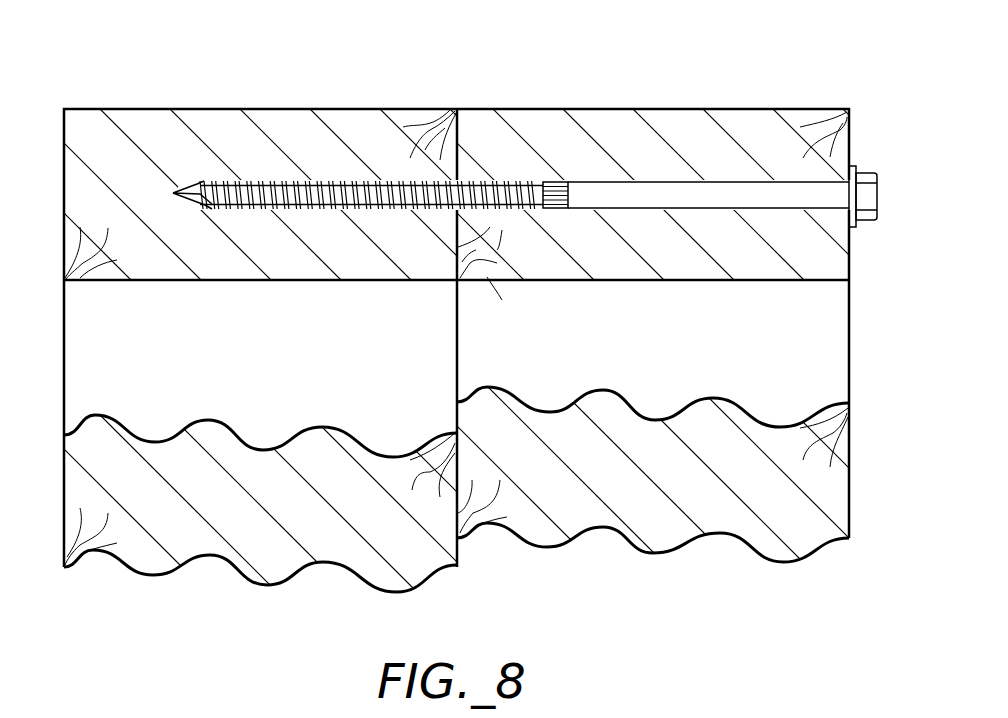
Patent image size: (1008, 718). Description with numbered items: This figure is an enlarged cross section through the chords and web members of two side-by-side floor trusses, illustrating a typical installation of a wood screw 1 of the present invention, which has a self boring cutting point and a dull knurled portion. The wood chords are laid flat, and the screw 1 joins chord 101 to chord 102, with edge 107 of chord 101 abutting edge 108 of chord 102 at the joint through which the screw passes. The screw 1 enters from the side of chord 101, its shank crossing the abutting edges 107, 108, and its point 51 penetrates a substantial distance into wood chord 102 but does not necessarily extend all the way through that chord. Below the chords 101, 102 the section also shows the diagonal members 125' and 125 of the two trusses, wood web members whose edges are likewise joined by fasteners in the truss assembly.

The wood screw 1 is at (598, 182).
The point 51 is at (173, 193).
The chord 101 is at (686, 109).
The chord 102 is at (273, 109).
The edge 107 is at (437, 142).
The edge 108 is at (488, 262).
The diagonal member 125 is at (696, 467).
The diagonal member 125' is at (317, 467).